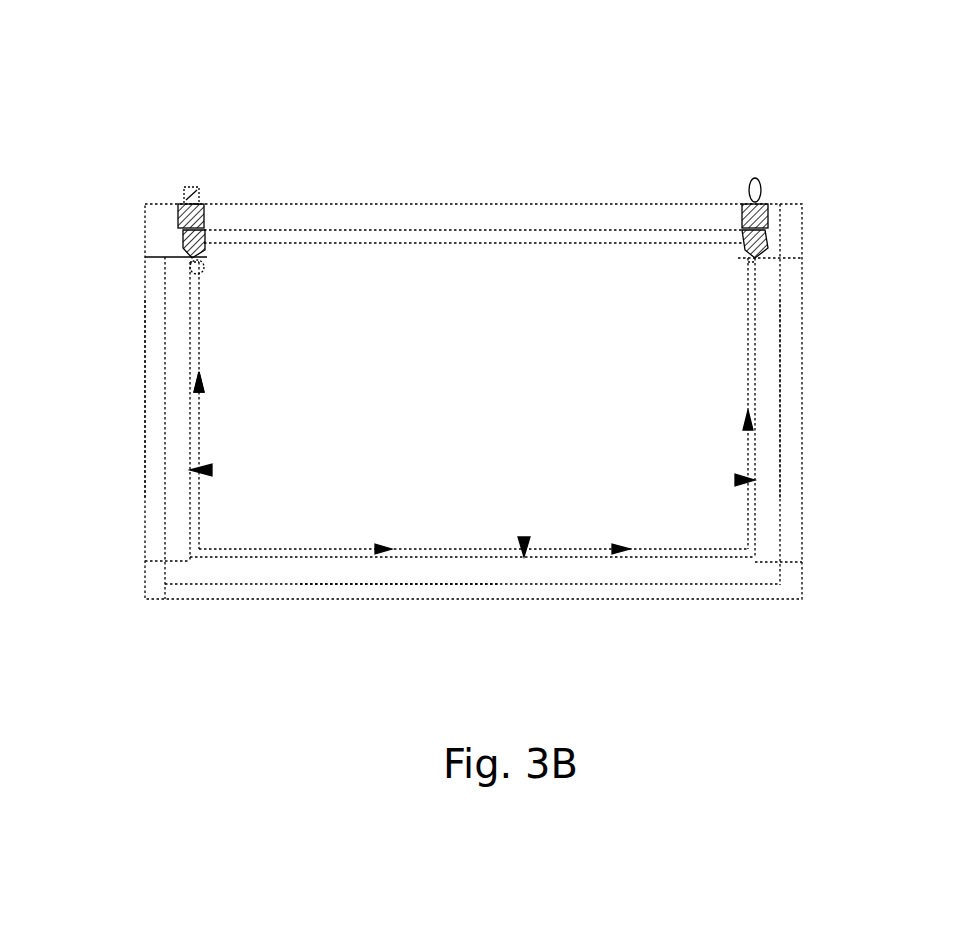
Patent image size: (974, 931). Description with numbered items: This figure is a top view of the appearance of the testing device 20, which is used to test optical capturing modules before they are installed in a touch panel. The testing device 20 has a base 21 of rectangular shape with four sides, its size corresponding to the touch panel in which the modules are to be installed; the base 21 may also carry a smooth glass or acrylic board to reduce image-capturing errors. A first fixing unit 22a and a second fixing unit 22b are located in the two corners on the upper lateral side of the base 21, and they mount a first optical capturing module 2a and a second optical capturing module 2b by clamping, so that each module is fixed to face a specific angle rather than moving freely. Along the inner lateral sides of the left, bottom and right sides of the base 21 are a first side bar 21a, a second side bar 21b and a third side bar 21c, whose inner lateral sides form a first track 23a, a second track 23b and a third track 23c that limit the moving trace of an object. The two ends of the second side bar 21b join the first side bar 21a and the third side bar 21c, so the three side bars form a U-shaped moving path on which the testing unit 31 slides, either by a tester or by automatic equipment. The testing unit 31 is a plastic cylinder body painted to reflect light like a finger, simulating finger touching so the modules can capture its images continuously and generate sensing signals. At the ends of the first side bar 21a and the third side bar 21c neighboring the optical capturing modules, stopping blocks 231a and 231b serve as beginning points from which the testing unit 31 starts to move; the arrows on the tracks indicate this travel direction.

The testing device 20 is at (862, 124).
The base 21 is at (463, 215).
The first side bar 21a is at (183, 425).
The second side bar 21b is at (326, 572).
The third side bar 21c is at (772, 398).
The first fixing unit 22a is at (745, 202).
The second fixing unit 22b is at (205, 186).
The first optical capturing module 2a is at (768, 252).
The second optical capturing module 2b is at (163, 244).
The testing unit 31 is at (192, 272).
The stopping block 231a is at (205, 262).
The stopping block 231b is at (745, 258).
The first track 23a is at (212, 470).
The second track 23b is at (523, 538).
The third track 23c is at (738, 480).